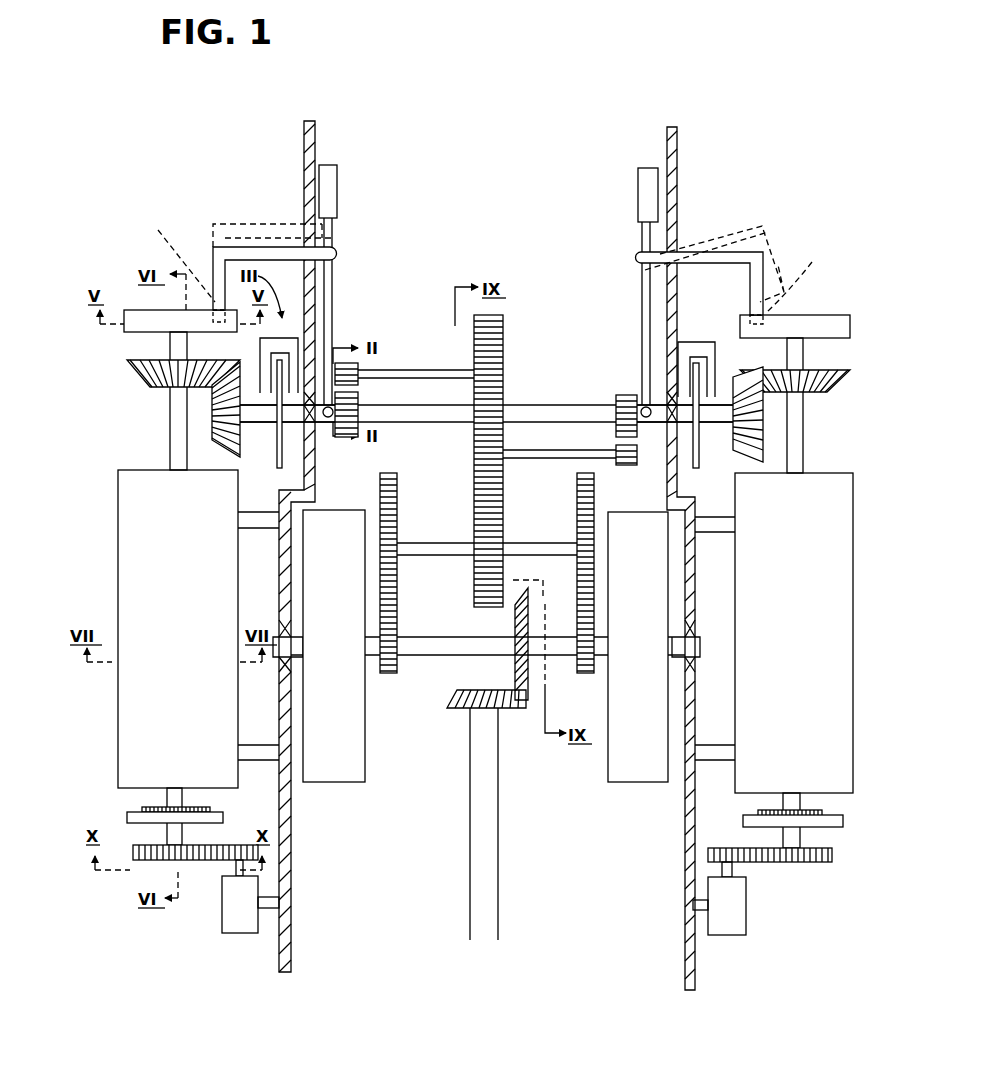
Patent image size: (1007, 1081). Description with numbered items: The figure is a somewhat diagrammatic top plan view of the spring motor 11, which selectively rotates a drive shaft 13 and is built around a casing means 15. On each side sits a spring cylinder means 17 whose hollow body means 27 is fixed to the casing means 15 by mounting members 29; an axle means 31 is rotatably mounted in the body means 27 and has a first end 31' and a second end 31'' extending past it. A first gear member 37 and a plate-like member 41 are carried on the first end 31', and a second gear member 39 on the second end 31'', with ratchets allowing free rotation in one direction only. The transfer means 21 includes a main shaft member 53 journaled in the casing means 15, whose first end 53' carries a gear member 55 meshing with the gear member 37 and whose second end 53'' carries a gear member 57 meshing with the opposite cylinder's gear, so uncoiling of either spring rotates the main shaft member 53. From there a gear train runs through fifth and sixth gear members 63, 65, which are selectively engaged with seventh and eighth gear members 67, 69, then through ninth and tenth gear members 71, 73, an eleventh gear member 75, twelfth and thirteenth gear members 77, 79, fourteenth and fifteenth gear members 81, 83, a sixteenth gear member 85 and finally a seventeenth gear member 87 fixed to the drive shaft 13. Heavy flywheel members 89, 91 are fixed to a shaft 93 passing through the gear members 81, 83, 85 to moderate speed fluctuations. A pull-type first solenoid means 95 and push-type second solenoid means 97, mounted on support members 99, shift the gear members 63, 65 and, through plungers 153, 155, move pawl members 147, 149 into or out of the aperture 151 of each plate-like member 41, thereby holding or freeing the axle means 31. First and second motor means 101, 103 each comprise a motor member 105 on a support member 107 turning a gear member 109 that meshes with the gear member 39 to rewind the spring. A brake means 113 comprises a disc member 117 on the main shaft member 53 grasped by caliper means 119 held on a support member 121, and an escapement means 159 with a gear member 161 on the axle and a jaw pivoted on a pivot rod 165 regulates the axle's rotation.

The spring motor 11 is at (745, 93).
The drive shaft 13 is at (472, 930).
The casing means 15 is at (288, 945).
The first spring cylinder means 17 is at (108, 690).
The transfer means 21 is at (528, 265).
The body means 27 is at (118, 568).
The mounting members 29 is at (270, 528).
The axle means 31 is at (490, 402).
The first end of the axle means 31' is at (478, 354).
The second end of the axle means 31'' is at (465, 818).
The first gear member 37 is at (155, 388).
The second gear member 39 is at (150, 862).
The plate-like member 41 is at (136, 318).
The main shaft member 53 is at (486, 384).
The first end of the main shaft member 53' is at (286, 448).
The second end of the main shaft member 53'' is at (685, 442).
The first gear member of the transfer means 55 is at (215, 414).
The second gear member of the transfer means 57 is at (763, 430).
The fifth gear member 63 is at (358, 428).
The sixth gear member 65 is at (630, 394).
The seventh gear member 67 is at (360, 366).
The eighth gear member 69 is at (630, 467).
The ninth gear member 71 is at (478, 459).
The tenth gear member 73 is at (477, 461).
The eleventh gear member 75 is at (496, 536).
The twelfth gear member 77 is at (400, 594).
The thirteenth gear member 79 is at (564, 587).
The fourteenth gear member 81 is at (386, 673).
The fifteenth gear member 83 is at (590, 673).
The sixteenth gear member 85 is at (517, 606).
The seventeenth gear member 87 is at (462, 706).
The flywheel member 89 is at (332, 783).
The flywheel member 91 is at (635, 782).
The shaft 93 is at (428, 650).
The first solenoid means 95 is at (337, 194).
The second solenoid means 97 is at (638, 196).
The support members 99 is at (318, 205).
The first motor means 101 is at (205, 940).
The second motor means 103 is at (757, 962).
The motor member 105 is at (240, 922).
The support member 107 is at (268, 905).
The gear member 109 is at (240, 860).
The second brake means 113 is at (700, 332).
The disc member 117 is at (282, 462).
The caliper means 119 is at (261, 358).
The support member 121 is at (305, 325).
The first pawl member 147 is at (244, 232).
The second pawl member 149 is at (735, 240).
The aperture 151 is at (481, 263).
The movable plunger 153 is at (336, 272).
The movable plunger 155 is at (642, 292).
The escapement means 159 is at (186, 823).
The gear member 161 is at (206, 808).
The pivot rod 165 is at (186, 770).